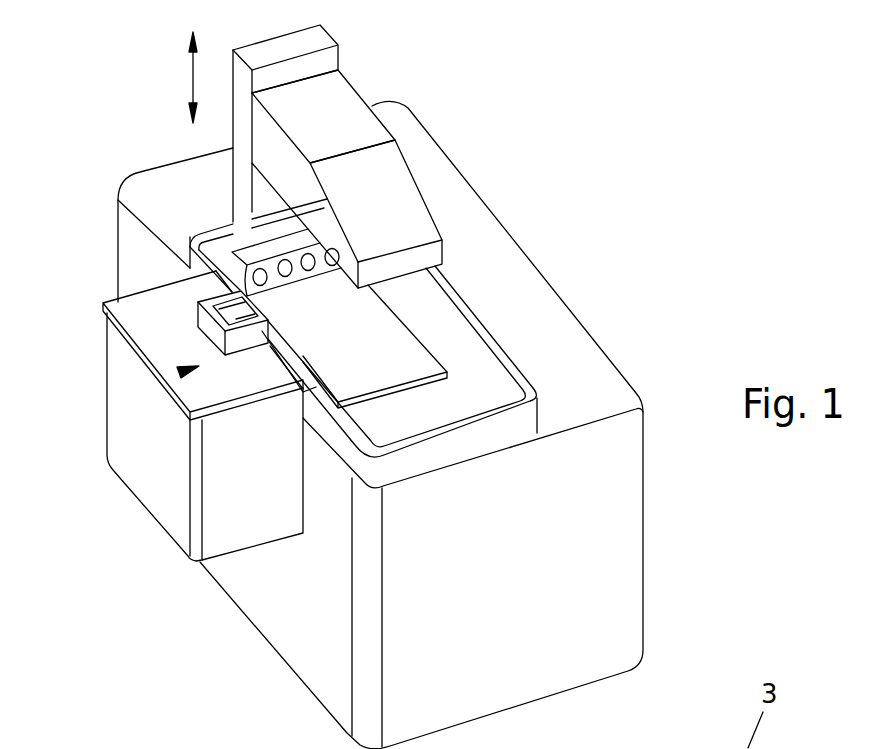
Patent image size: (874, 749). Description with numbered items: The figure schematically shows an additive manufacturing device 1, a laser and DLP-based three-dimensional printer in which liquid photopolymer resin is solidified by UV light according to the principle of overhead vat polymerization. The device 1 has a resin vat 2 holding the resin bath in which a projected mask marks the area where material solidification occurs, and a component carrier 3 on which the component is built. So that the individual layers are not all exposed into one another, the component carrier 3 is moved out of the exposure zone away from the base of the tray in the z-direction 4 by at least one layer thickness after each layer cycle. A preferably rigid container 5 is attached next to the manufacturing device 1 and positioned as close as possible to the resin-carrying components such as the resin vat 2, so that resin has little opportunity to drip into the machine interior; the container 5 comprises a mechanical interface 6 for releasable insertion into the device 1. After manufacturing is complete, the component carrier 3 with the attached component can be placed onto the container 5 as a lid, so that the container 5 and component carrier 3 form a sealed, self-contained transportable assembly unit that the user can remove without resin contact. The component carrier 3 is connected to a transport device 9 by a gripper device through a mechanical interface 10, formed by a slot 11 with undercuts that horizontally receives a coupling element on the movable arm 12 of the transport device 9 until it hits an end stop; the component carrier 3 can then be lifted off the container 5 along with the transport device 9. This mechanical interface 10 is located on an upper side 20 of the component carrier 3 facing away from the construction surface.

The additive manufacturing device 1 is at (631, 188).
The resin vat 2 is at (468, 397).
The component carrier 3 is at (158, 323).
The z-direction 4 is at (186, 78).
The container 5 is at (162, 450).
The mechanical interface 6 is at (307, 383).
The transport device 9 is at (399, 179).
The mechanical interface 10 is at (215, 312).
The slot 11 is at (307, 63).
The movable arm 12 is at (342, 128).
The upper side 20 is at (180, 372).